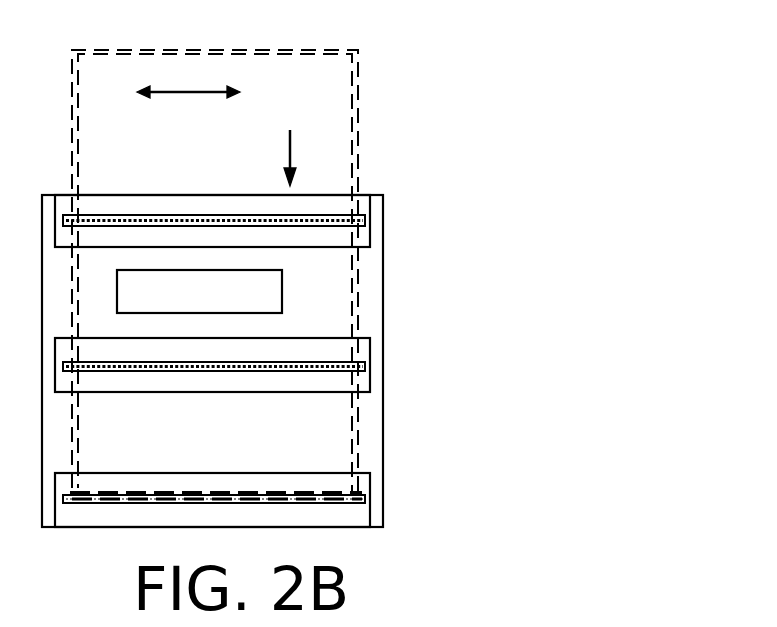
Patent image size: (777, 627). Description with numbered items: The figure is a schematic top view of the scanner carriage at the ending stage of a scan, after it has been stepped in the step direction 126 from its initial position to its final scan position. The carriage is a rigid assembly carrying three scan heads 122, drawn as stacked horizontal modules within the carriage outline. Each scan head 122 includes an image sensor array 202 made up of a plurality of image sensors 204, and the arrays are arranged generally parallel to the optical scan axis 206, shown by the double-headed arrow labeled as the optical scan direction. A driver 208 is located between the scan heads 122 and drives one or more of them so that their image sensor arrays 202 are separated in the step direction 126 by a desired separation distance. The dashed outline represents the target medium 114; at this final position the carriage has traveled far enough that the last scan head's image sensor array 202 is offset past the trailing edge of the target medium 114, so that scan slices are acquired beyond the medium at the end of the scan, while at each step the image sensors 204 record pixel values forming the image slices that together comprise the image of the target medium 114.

The target medium 114 is at (358, 93).
The scan heads 122 is at (383, 308).
The step direction 126 is at (290, 147).
The image sensor array 202 is at (293, 497).
The image sensors 204 is at (180, 497).
The optical scan axis 206 is at (200, 90).
The driver 208 is at (199, 291).